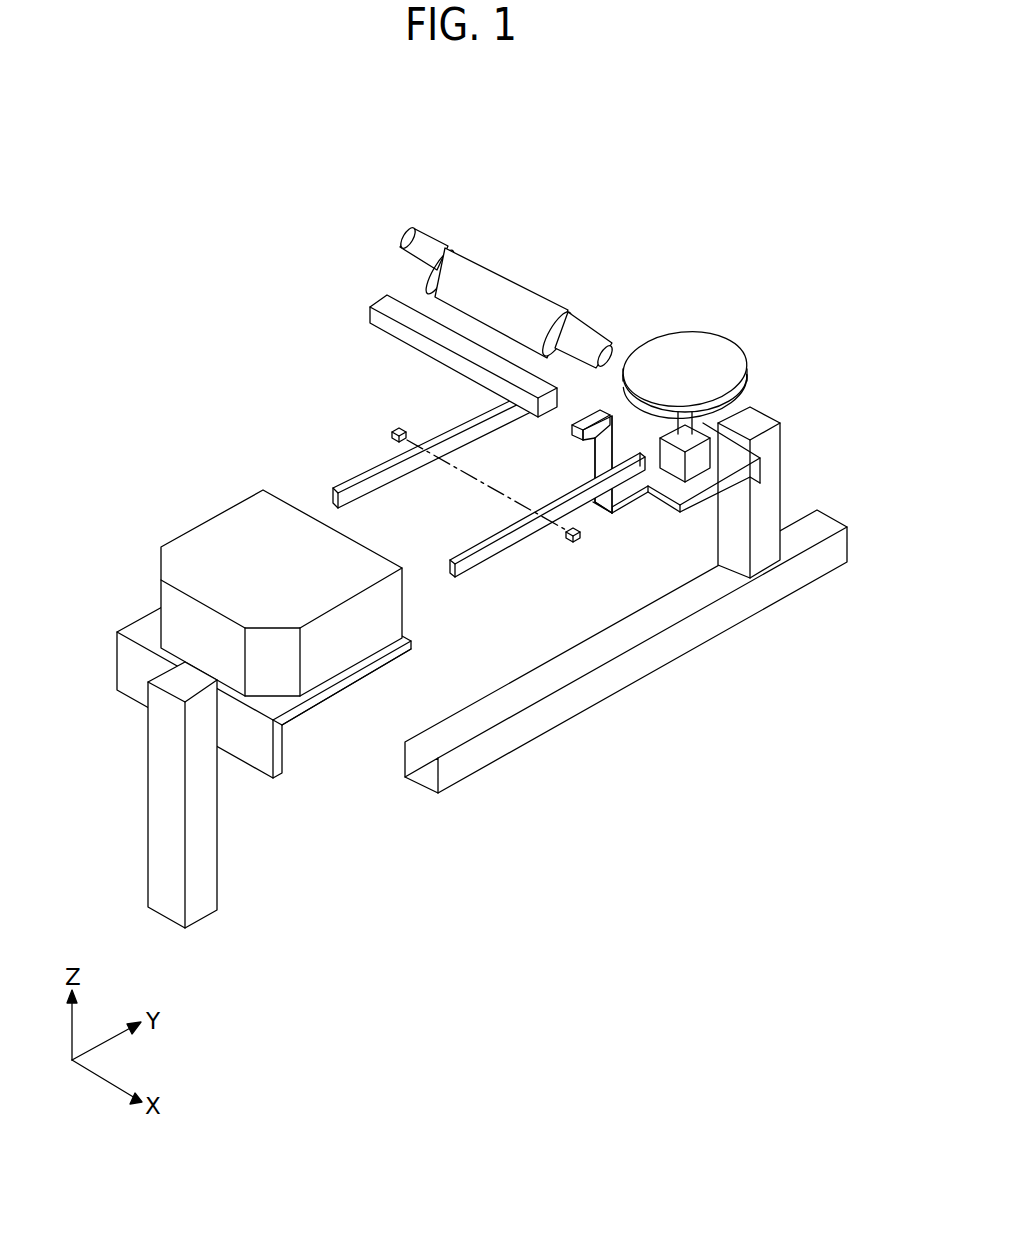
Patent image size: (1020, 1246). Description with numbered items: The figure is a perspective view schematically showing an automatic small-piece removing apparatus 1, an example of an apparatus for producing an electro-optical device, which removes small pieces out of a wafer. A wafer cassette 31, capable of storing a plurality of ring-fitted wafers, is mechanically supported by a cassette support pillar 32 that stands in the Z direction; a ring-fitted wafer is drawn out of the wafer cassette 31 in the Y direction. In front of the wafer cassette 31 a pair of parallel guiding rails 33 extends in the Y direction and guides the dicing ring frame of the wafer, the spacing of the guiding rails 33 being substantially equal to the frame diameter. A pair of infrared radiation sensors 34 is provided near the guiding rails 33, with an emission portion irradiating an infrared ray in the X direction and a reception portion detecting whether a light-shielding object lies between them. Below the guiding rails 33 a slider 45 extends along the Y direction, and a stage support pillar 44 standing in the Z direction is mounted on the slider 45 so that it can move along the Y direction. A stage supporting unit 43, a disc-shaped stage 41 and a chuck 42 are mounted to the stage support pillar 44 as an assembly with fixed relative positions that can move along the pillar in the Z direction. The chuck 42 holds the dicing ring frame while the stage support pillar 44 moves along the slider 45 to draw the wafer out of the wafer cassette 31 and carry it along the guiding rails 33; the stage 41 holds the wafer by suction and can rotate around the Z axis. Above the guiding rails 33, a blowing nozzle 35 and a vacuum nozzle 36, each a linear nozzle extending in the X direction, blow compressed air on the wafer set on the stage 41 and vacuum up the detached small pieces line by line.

The small-piece removing apparatus 1 is at (699, 171).
The wafer cassette 31 is at (212, 535).
The cassette support pillar 32 is at (155, 800).
The guiding rails 33 is at (495, 547).
The infrared radiation sensors 34 is at (395, 427).
The blowing nozzle 35 is at (387, 300).
The vacuum nozzle 36 is at (507, 292).
The stage 41 is at (704, 350).
The chuck 42 is at (577, 432).
The stage supporting unit 43 is at (703, 460).
The stage support pillar 44 is at (770, 490).
The slider 45 is at (833, 547).